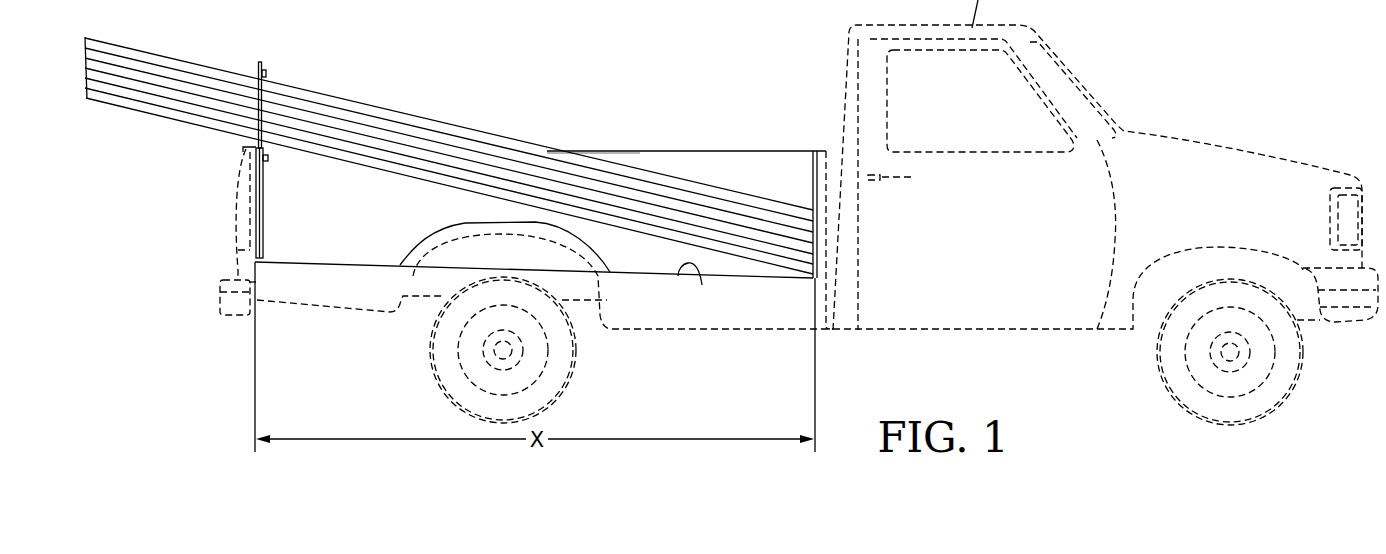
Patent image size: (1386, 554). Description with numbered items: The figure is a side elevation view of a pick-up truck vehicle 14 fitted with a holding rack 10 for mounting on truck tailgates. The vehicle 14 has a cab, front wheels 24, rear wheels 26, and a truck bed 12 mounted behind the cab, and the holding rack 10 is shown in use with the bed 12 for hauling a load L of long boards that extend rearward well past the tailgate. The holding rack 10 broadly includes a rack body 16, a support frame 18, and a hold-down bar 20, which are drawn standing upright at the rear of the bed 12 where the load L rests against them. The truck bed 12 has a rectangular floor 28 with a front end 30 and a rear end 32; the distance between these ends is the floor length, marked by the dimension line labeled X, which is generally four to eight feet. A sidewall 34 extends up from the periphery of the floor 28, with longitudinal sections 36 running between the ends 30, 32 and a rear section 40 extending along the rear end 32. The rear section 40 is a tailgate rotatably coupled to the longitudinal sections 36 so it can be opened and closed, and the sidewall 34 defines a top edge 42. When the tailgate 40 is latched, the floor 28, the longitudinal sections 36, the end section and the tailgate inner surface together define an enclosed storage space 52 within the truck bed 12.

The holding rack 10 is at (334, 66).
The truck bed 12 is at (697, 151).
The vehicle 14 is at (1176, 35).
The rack body 16 is at (262, 90).
The support frame 18 is at (258, 203).
The hold-down bar 20 is at (258, 66).
The front wheels 24 is at (1167, 354).
The rear wheels 26 is at (442, 354).
The floor 28 is at (702, 285).
The front end 30 is at (811, 295).
The rear end 32 is at (262, 278).
The sidewall 34 is at (244, 150).
The longitudinal sections 36 is at (773, 181).
The rear section 40 is at (250, 178).
The top edge 42 is at (607, 151).
The enclosed storage space 52 is at (744, 166).
The load L is at (445, 123).